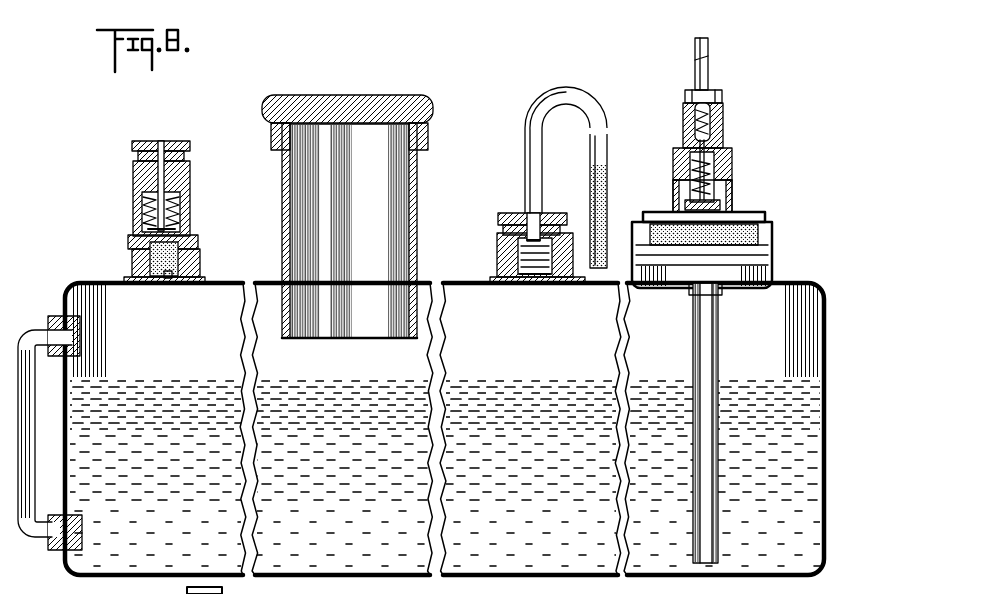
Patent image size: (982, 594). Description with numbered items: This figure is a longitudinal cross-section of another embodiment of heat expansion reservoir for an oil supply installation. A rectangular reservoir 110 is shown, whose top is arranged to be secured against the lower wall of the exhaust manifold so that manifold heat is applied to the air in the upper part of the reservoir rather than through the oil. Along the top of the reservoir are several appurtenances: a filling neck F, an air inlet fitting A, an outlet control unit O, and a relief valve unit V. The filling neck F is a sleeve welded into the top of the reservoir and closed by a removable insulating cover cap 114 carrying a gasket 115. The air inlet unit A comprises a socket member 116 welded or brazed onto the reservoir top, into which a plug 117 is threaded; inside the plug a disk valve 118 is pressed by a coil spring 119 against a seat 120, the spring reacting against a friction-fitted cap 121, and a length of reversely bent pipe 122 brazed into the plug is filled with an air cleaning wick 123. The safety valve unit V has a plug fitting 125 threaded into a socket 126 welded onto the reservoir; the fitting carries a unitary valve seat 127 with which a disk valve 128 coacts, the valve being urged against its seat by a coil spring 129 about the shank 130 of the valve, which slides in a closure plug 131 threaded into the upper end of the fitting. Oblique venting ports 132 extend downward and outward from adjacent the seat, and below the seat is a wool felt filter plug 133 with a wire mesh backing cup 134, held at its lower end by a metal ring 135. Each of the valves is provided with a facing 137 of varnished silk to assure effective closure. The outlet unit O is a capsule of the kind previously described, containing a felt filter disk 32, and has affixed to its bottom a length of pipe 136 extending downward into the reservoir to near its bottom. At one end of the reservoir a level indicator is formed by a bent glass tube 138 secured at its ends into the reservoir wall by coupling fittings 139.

The rectangular reservoir 110 is at (537, 577).
The bent glass tube 138 is at (30, 430).
The coupling fittings 139 is at (48, 318).
The filling neck F is at (363, 204).
The gasket 115 is at (417, 98).
The insulating cover cap 114 is at (428, 115).
The relief valve unit V is at (165, 222).
The closure plug 131 is at (190, 143).
The shank 130 is at (183, 167).
The disk valve 128 is at (178, 192).
The facing 137 is at (176, 222).
The coil spring 129 is at (142, 207).
The oblique venting ports 132 is at (192, 234).
The valve seat 127 is at (128, 242).
The backing cup 134 is at (132, 258).
The plug fitting 125 is at (198, 258).
The socket 126 is at (205, 272).
The filter plug 133 is at (160, 280).
The metal ring 135 is at (168, 282).
The air inlet fitting A is at (528, 249).
The plug 117 is at (500, 238).
The socket member 116 is at (497, 270).
The coil spring 119 is at (552, 250).
The seat 120 is at (542, 222).
The friction-fitted cap 121 is at (528, 277).
The disk valve 118 is at (540, 277).
The reversely bent pipe 122 is at (525, 155).
The air cleaning wick 123 is at (607, 185).
The outlet control unit O is at (720, 163).
The felt filter disk 32 is at (695, 240).
The pipe 136 is at (718, 462).